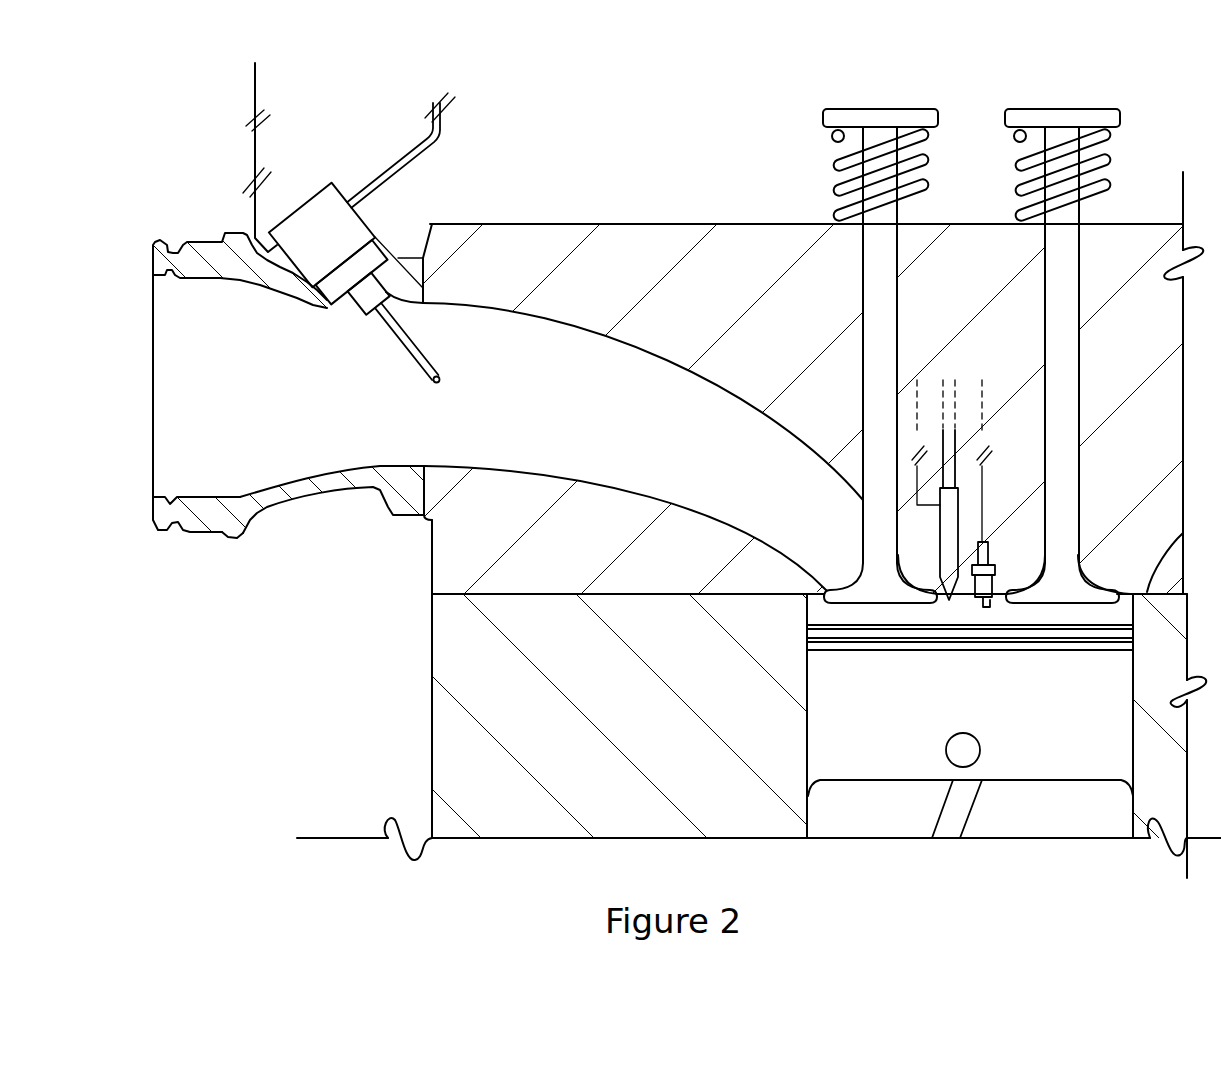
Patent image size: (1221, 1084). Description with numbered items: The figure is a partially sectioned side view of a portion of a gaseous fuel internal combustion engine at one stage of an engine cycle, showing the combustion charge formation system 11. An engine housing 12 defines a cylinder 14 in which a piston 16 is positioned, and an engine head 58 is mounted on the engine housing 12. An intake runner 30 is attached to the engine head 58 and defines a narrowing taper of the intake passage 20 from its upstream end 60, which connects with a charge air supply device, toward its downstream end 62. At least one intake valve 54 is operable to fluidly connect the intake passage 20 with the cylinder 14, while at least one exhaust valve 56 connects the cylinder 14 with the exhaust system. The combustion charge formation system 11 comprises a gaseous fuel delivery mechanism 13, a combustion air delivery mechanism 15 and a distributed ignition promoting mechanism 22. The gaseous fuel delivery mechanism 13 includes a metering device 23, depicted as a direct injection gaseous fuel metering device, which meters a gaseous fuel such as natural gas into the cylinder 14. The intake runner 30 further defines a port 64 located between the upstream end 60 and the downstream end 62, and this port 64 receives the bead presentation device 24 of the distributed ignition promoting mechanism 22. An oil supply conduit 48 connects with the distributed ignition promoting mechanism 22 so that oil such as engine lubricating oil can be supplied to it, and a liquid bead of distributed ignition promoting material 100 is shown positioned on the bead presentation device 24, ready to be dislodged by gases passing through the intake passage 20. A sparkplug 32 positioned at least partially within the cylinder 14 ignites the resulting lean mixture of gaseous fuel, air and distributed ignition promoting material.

The combustion charge formation system 11 is at (126, 184).
The engine housing 12 is at (453, 619).
The gaseous fuel delivery mechanism 13 is at (957, 497).
The metering device 23 is at (960, 441).
The cylinder 14 is at (836, 615).
The combustion air delivery mechanism 15 is at (188, 540).
The piston 16 is at (826, 732).
The intake passage 20 is at (321, 433).
The distributed ignition promoting mechanism 22 is at (352, 214).
The bead presentation device 24 is at (405, 369).
The intake runner 30 is at (231, 537).
The sparkplug 32 is at (987, 548).
The oil supply conduit 48 is at (443, 120).
The intake valve 54 is at (866, 262).
The exhaust valve 56 is at (1075, 262).
The engine head 58 is at (530, 240).
The upstream end 60 is at (153, 498).
The downstream end 62 is at (426, 468).
The port 64 is at (353, 316).
The liquid bead of distributed ignition promoting material 100 is at (446, 390).